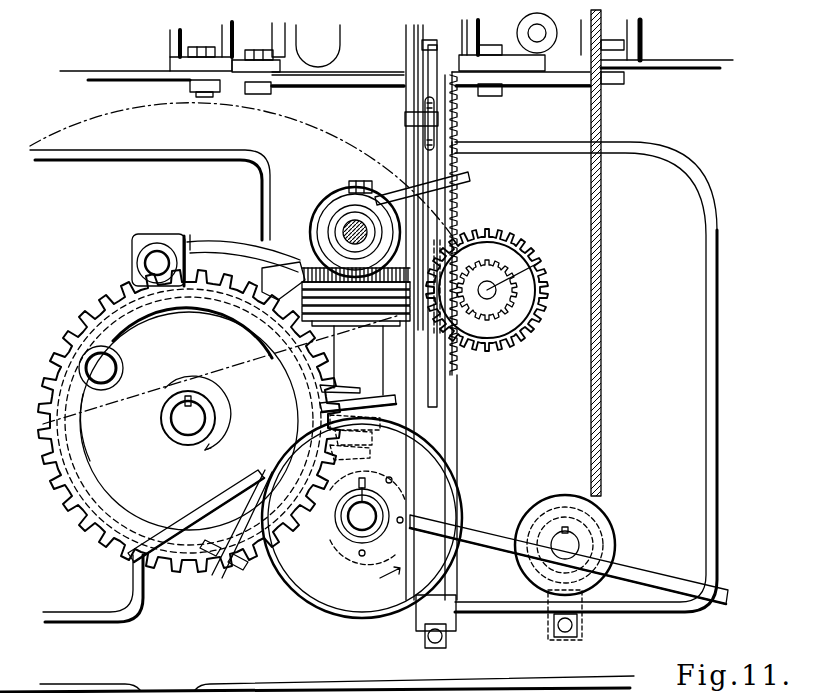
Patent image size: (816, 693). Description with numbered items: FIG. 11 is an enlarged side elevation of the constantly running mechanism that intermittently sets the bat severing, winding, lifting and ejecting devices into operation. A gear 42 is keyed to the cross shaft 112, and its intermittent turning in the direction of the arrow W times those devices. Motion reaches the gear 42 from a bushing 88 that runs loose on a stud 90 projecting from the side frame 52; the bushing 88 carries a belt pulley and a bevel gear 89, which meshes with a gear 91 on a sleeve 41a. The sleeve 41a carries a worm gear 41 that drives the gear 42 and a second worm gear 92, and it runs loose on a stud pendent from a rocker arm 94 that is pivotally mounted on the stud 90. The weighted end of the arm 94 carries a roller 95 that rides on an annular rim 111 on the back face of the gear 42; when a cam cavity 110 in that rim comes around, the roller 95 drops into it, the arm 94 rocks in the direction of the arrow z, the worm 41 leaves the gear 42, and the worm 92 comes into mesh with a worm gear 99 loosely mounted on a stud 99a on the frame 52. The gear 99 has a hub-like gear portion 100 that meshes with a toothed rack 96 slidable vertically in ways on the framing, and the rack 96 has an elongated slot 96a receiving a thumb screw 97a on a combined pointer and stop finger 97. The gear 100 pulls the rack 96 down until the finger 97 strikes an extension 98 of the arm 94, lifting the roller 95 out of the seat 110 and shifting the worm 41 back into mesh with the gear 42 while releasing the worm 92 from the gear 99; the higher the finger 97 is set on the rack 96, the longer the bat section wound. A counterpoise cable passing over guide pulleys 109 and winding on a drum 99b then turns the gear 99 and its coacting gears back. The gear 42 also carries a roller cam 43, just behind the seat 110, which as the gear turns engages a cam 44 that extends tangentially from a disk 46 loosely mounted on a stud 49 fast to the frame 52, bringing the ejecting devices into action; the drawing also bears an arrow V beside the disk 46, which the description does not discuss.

The combined pointer and stop finger 97 is at (441, 128).
The thumb screw 97a is at (440, 140).
The side frame 52 is at (434, 386).
The toothed rack 96 is at (459, 211).
The vertically elongated slot 96a is at (437, 406).
The stud 90 is at (332, 215).
The extension 98 is at (385, 180).
The bevel gear 89 is at (305, 268).
The bushing 88 is at (305, 260).
The worm gear 92 is at (345, 312).
The rocker arm 94 is at (245, 242).
The arrow z is at (190, 235).
The roller 95 is at (138, 256).
The gear 91 is at (275, 272).
The gear 42 is at (80, 316).
The cam cavity 110 is at (121, 306).
The annular rim 111 is at (232, 322).
The roller cam 43 is at (123, 364).
The cross shaft 112 is at (200, 405).
The arrow w W is at (210, 416).
The worm gear 41 is at (372, 398).
The sleeve 41a is at (350, 407).
The disk 46 is at (362, 518).
The stud 49 is at (350, 512).
The rotation direction V is at (390, 584).
The cam 44 is at (200, 524).
The guide pulleys 109 is at (600, 532).
The worm gear 99 is at (487, 279).
The stud 99a is at (540, 262).
The drum 99b is at (528, 312).
The hub-like gear portion 100 is at (498, 280).